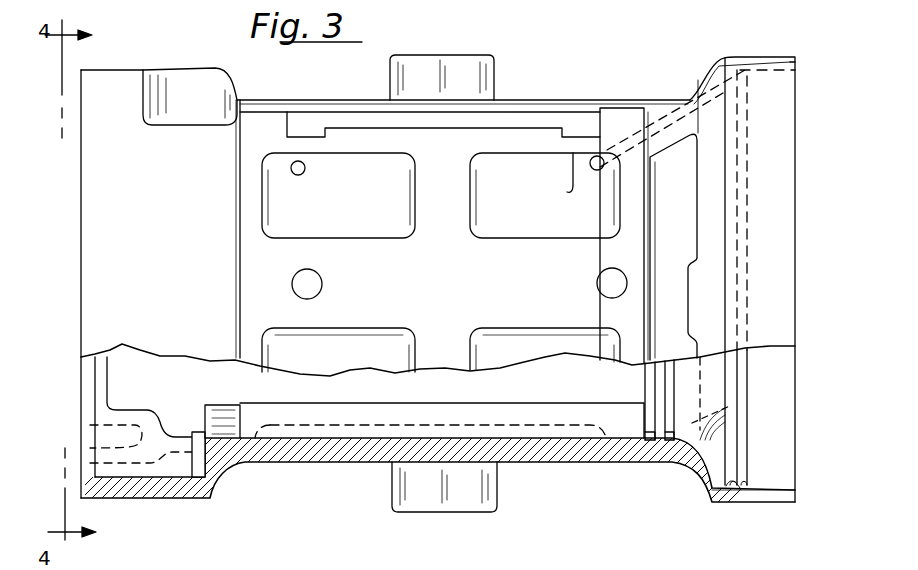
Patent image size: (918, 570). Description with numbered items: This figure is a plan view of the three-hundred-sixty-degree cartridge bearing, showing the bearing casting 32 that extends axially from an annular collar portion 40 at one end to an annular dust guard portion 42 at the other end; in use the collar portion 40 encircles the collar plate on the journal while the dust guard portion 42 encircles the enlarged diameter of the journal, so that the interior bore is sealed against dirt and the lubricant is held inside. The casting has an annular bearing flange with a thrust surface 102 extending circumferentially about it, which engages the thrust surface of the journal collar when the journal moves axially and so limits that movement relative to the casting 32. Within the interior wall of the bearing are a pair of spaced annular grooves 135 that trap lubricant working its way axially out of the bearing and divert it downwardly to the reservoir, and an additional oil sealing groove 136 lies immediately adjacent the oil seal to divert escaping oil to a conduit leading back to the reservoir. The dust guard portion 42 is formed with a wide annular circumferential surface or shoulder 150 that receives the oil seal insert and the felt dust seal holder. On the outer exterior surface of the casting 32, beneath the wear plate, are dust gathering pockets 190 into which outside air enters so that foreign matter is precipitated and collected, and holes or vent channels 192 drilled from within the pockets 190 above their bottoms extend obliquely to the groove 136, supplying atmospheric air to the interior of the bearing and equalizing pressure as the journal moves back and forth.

The bearing casting 32 is at (524, 112).
The annular collar portion 40 is at (140, 490).
The annular dust guard portion 42 is at (765, 498).
The thrust surface 102 is at (207, 420).
The annular grooves 135 is at (668, 442).
The oil sealing groove 136 is at (735, 480).
The annular circumferential surface 150 is at (777, 472).
The dust gathering pockets 190 is at (497, 160).
The vent channel 192 is at (298, 175).